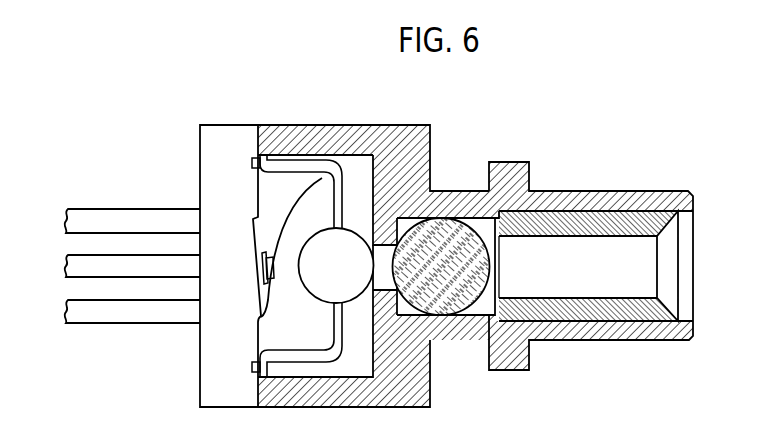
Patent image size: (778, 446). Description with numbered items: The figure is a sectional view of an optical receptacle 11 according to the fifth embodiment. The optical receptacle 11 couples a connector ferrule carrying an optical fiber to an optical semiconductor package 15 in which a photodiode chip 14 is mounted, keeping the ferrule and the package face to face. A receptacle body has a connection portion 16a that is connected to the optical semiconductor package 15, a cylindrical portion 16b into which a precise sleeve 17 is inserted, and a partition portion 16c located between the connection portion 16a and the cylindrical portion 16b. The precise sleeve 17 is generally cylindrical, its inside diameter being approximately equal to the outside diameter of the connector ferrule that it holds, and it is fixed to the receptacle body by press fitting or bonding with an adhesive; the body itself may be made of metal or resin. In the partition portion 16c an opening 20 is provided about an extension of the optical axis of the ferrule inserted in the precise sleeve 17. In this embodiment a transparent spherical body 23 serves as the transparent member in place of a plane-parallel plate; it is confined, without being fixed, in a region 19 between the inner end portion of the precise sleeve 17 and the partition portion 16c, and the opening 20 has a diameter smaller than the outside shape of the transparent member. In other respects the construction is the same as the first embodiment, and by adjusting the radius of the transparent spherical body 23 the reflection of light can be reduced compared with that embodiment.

The optical receptacle 11 is at (597, 355).
The photodiode chip 14 is at (322, 178).
The optical semiconductor package 15 is at (225, 185).
The connection portion 16a is at (303, 133).
The cylindrical portion 16b is at (568, 192).
The partition portion 16c is at (382, 232).
The precise sleeve 17 is at (640, 226).
The region 19 is at (492, 302).
The opening 20 is at (385, 285).
The transparent spherical body 23 is at (463, 304).